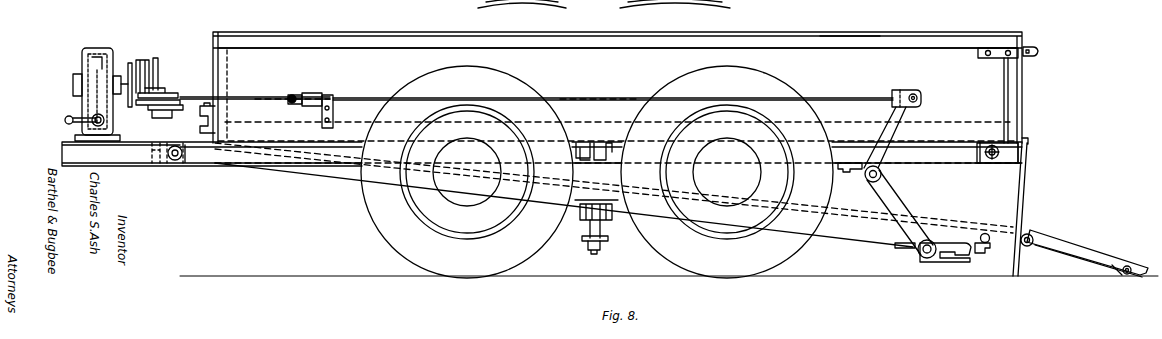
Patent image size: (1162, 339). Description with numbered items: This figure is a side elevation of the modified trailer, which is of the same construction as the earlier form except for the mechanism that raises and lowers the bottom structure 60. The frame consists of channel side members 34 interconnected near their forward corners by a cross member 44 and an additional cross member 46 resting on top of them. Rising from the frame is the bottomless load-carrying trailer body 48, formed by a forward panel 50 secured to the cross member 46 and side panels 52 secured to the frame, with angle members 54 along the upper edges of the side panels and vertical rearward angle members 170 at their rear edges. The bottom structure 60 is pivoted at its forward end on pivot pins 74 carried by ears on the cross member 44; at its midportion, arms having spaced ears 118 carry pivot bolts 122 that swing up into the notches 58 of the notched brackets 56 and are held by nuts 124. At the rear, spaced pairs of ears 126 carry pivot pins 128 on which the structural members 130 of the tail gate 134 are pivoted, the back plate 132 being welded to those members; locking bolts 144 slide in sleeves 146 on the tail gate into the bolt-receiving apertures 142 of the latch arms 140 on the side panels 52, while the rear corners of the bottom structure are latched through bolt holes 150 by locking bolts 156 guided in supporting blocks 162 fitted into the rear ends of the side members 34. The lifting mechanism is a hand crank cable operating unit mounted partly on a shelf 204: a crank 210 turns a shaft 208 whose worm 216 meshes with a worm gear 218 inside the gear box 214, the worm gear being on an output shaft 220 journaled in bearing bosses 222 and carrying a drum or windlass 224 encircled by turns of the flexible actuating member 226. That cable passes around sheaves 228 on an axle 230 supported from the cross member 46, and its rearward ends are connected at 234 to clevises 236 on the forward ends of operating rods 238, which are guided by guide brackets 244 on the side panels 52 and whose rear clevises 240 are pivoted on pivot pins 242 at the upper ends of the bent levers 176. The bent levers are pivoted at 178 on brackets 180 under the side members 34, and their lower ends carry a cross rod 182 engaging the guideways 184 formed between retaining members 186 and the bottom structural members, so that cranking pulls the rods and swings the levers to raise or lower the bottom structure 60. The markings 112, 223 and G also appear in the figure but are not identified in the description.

The side members 34 is at (247, 162).
The cross member 44 is at (156, 165).
The additional cross member 46 is at (209, 128).
The load-carrying trailer body 48 is at (324, 30).
The forward panel 50 is at (212, 60).
The side panels 52 is at (257, 56).
The angle members 54 is at (853, 39).
The notched brackets 56 is at (600, 138).
The notches 58 is at (584, 138).
The bottom structure 60 is at (308, 195).
The pivot pins 74 is at (180, 178).
The wheel 112 is at (500, 1).
The spaced ears 118 is at (586, 220).
The pivot bolts 122 is at (588, 240).
The nuts 124 is at (592, 244).
The spaced pairs of ears 126 is at (1016, 234).
The pivot pins 128 is at (1028, 244).
The structural members 130 is at (1054, 214).
The back plate 132 is at (1090, 246).
The tail gate 134 is at (1083, 259).
The latch arms 140 is at (1029, 45).
The bolt-receiving apertures 142 is at (1038, 46).
The locking bolts 144 is at (1132, 273).
The housings or sleeves 146 is at (1116, 274).
The bolt holes 150 is at (985, 230).
The locking bolts 156 is at (1005, 158).
The supporting blocks 162 is at (1000, 152).
The vertical rearward angle members 170 is at (1008, 94).
The bent levers 176 is at (899, 194).
The pivot 178 is at (889, 178).
The brackets 180 is at (845, 166).
The cross rod 182 is at (930, 258).
The elongated slots or guideways 184 is at (952, 258).
The retaining members 186 is at (976, 268).
The shelf 204 is at (76, 141).
The shaft 208 is at (96, 122).
The crank 210 is at (78, 118).
The gear box 214 is at (83, 48).
The worm 216 is at (113, 126).
The worm gear 218 is at (82, 63).
The output shaft 220 is at (120, 96).
The bearing bosses 222 is at (76, 87).
The rod 223 is at (194, 106).
The drum or windlass 224 is at (166, 70).
The flexible actuating member 226 is at (138, 60).
The pulleys or sheaves 228 is at (174, 96).
The axle 230 is at (167, 82).
The connection 234 is at (290, 96).
The clevises 236 is at (310, 95).
The operating rods 238 is at (358, 98).
The clevises 240 is at (903, 90).
The pivot pins 242 is at (920, 99).
The guide brackets 244 is at (330, 93).
The ground G is at (802, 263).